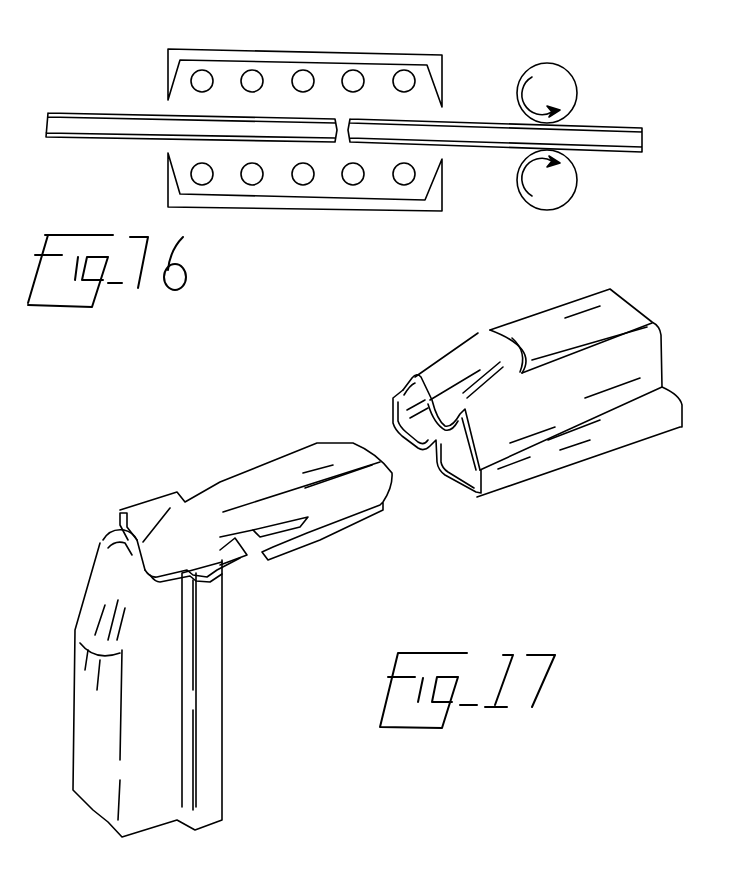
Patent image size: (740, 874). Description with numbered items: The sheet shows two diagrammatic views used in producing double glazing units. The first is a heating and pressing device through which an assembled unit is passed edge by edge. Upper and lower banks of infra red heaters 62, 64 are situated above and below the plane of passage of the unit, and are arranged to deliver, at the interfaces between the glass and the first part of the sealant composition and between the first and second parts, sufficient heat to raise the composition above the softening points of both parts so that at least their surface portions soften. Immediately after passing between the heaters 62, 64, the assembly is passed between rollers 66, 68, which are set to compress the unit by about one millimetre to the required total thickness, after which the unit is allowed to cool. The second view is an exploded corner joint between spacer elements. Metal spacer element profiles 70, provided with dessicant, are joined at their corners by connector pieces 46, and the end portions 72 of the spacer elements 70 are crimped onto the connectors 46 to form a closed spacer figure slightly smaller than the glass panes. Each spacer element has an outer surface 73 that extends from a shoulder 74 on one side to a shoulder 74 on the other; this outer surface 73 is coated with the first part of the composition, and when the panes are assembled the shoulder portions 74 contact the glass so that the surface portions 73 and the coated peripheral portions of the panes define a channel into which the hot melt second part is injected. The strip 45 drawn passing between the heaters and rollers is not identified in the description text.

In FIG. 16, the strip 45 is at (84, 113).
In FIG. 17, the connector piece 46 is at (268, 460).
In FIG. 16, the upper bank of infra red heaters 62 is at (404, 80).
In FIG. 16, the lower bank of infra red heaters 64 is at (404, 180).
In FIG. 16, the roller 66 is at (535, 72).
In FIG. 16, the roller 68 is at (542, 203).
In FIG. 17, the spacer element profile 70 is at (525, 470).
In FIG. 17, the end portion 72 is at (458, 372).
In FIG. 17, the outer surface 73 is at (582, 320).
In FIG. 17, the shoulder 74 is at (388, 413).